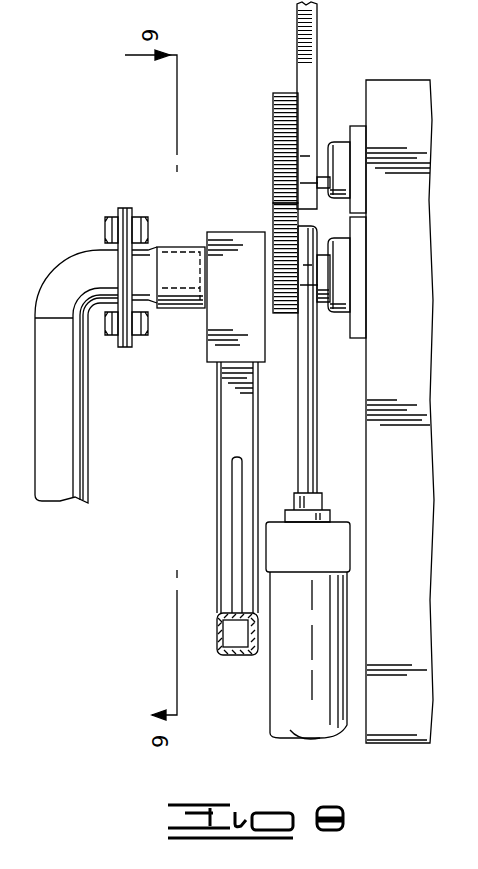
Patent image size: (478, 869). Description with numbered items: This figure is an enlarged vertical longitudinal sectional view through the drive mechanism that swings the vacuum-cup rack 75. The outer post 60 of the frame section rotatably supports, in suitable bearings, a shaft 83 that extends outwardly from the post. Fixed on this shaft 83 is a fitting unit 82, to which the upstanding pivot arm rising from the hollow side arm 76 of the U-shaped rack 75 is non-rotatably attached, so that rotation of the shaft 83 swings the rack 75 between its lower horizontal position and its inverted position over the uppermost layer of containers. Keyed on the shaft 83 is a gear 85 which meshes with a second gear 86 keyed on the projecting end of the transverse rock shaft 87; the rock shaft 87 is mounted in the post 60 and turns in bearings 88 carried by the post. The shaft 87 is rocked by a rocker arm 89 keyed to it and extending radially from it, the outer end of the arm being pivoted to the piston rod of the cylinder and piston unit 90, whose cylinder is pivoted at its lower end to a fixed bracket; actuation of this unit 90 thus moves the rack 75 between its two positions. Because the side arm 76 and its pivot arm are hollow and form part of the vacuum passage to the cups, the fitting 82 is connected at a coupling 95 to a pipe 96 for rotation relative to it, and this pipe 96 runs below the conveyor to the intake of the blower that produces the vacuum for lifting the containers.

The outer post 60 is at (412, 475).
The rack 75 is at (215, 547).
The side arm 76 is at (232, 658).
The fitting unit 82 is at (215, 353).
The shaft 83 is at (270, 288).
The gear 85 is at (275, 250).
The second gear 86 is at (272, 115).
The transverse rock shaft 87 is at (318, 153).
The bearing 88 is at (341, 152).
The rocker arm 89 is at (318, 25).
The cylinder and piston unit 90 is at (277, 702).
The coupling 95 is at (178, 253).
The pipe 96 is at (40, 378).